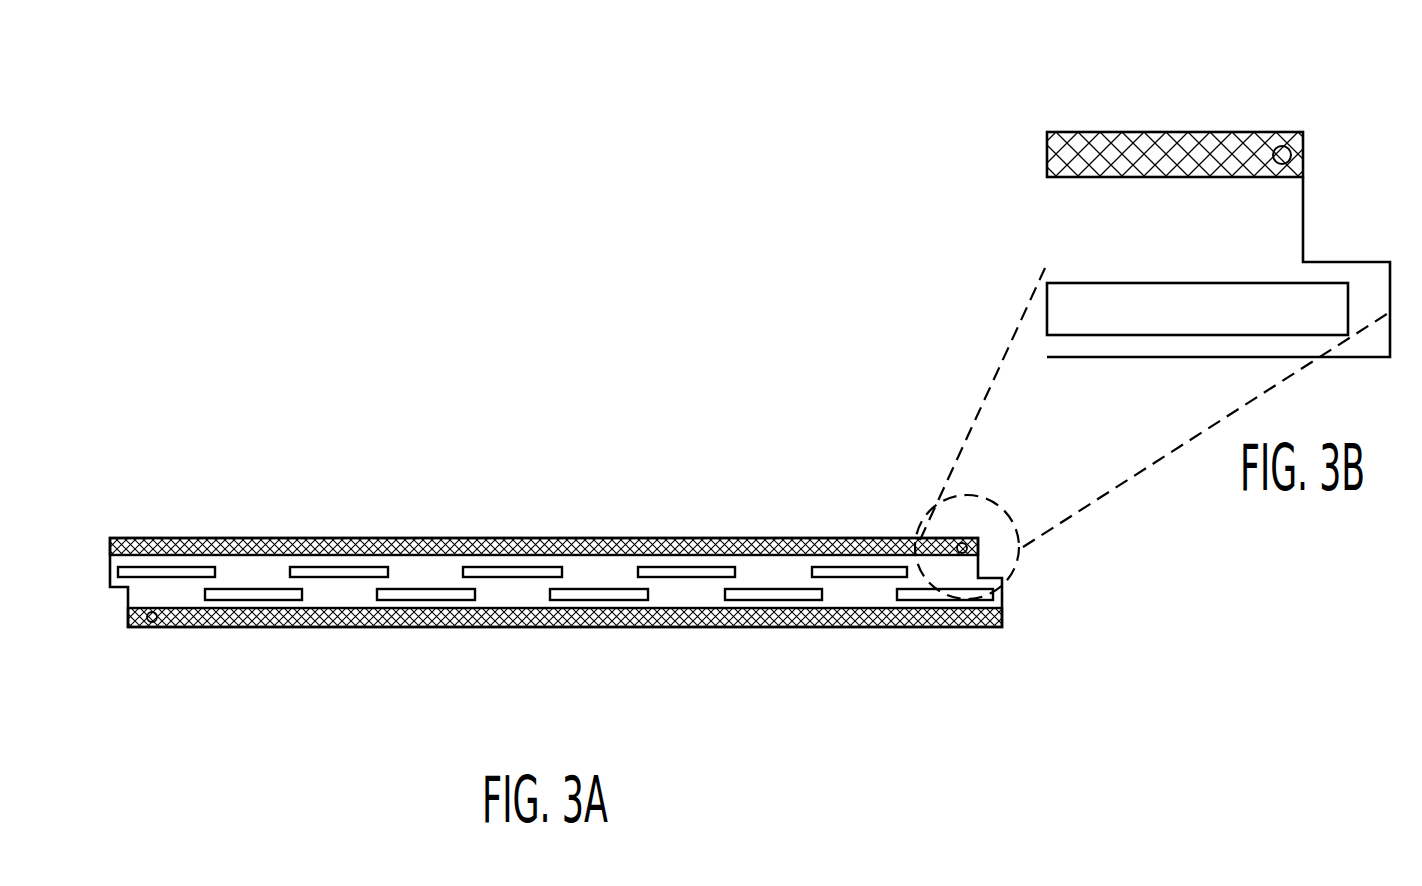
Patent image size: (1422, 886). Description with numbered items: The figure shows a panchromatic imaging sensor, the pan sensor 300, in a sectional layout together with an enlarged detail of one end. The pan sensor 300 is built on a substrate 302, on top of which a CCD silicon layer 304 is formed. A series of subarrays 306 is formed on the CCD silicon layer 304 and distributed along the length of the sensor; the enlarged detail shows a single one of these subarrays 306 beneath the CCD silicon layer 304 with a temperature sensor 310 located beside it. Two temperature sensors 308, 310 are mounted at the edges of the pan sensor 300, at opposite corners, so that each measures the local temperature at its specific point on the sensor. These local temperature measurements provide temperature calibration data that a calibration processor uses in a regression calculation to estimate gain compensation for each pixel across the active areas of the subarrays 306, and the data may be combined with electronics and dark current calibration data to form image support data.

In FIG. 3A, the pan sensor 300 is at (583, 224).
In FIG. 3A, the substrate 302 is at (632, 538).
In FIG. 3A, the CCD silicon layer 304 is at (142, 593).
In FIG. 3B, the CCD silicon layer 304 is at (1285, 218).
In FIG. 3A, the subarrays 306 is at (887, 627).
In FIG. 3B, the subarrays 306 is at (1085, 292).
In FIG. 3A, the temperature sensor 308 is at (151, 623).
In FIG. 3A, the temperature sensor 310 is at (935, 545).
In FIG. 3B, the temperature sensor 310 is at (1282, 146).